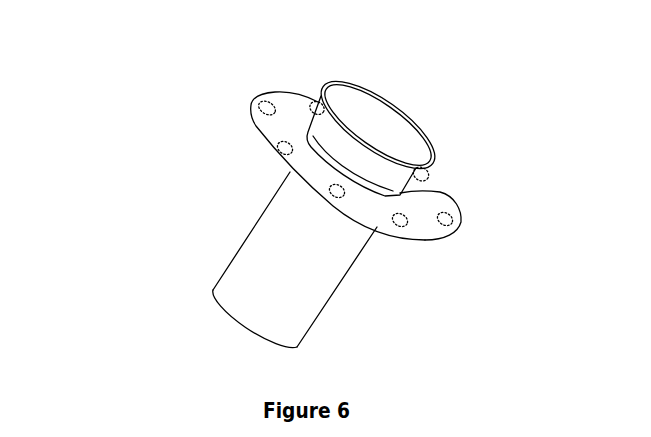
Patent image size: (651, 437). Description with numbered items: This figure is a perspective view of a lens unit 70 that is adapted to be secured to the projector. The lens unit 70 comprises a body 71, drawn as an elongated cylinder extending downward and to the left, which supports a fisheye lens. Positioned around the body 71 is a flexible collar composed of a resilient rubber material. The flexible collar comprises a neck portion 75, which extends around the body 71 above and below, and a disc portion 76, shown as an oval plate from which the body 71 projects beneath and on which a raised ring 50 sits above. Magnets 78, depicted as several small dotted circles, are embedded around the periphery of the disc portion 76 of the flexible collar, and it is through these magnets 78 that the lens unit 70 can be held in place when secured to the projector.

The lens unit 70 is at (135, 218).
The body 71 is at (286, 153).
The neck portion 75 is at (265, 128).
The disc portion 76 is at (428, 232).
The ring collar 50 is at (406, 130).
The magnets 78 is at (265, 108).